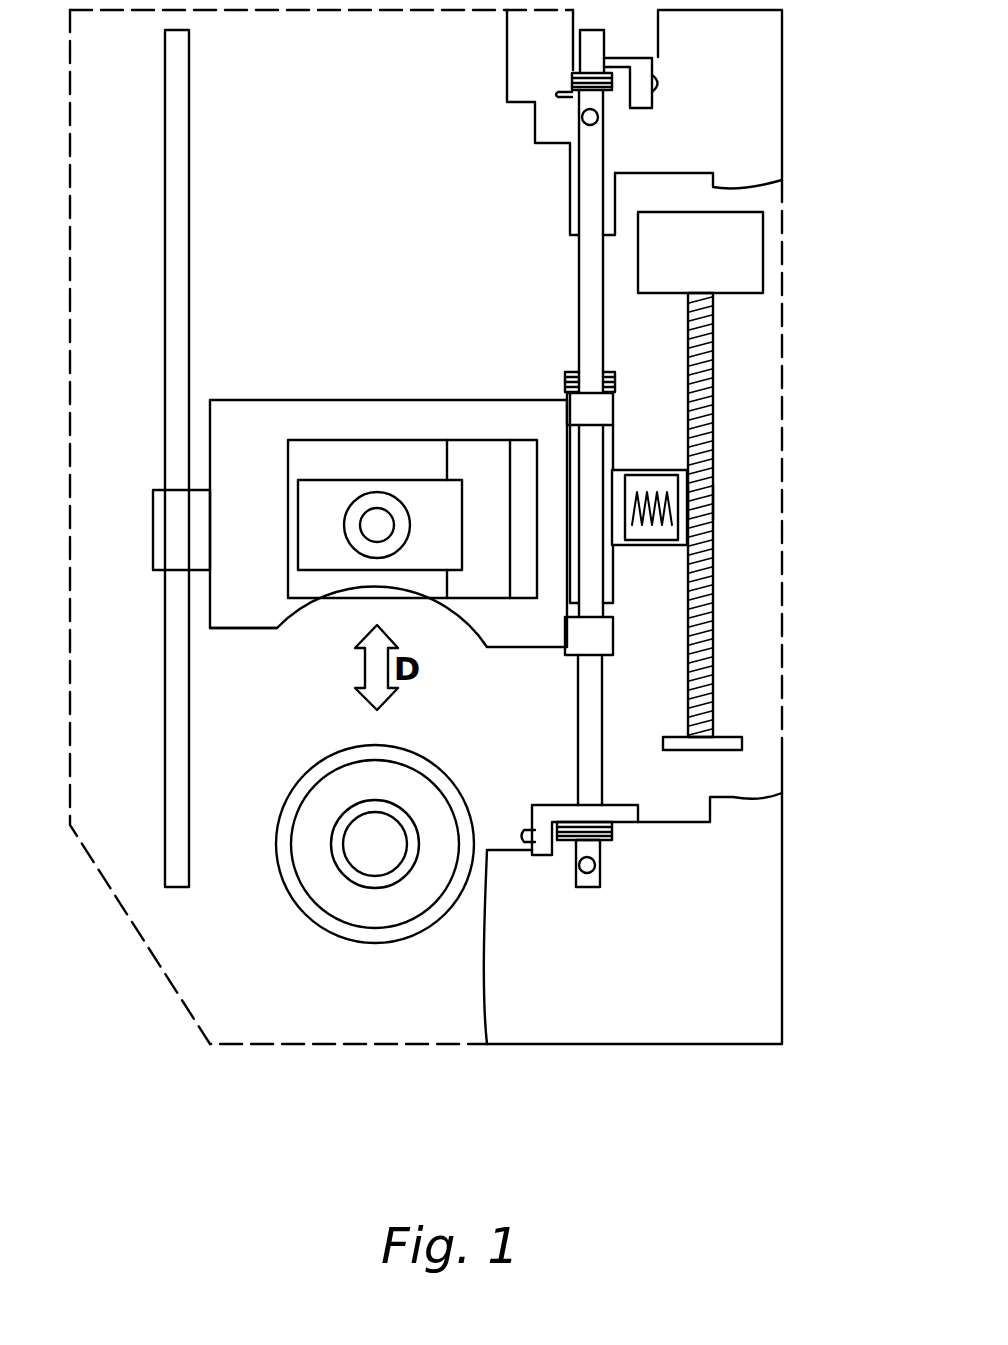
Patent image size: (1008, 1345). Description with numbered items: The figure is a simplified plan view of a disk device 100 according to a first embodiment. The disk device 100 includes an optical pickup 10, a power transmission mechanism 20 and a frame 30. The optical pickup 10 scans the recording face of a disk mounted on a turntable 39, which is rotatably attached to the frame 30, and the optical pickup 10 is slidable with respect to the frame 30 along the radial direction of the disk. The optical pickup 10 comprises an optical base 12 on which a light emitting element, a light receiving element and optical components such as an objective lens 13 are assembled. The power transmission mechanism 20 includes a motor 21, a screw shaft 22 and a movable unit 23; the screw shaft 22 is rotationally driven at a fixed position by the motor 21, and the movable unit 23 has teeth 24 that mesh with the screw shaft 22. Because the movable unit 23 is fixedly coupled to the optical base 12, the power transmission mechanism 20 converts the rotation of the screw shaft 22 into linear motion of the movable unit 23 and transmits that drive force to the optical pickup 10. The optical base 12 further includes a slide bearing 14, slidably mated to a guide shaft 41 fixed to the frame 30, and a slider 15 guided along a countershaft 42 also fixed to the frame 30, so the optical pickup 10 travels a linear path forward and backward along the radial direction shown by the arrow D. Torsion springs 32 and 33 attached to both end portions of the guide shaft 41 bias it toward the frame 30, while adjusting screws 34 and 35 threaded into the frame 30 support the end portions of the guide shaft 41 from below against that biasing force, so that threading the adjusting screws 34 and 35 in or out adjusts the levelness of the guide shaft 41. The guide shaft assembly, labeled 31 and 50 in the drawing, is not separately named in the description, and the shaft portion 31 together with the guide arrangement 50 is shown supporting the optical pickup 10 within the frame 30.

The optical pickup 10 is at (388, 507).
The optical base 12 is at (242, 628).
The objective lens 13 is at (372, 517).
The slide bearing 14 is at (625, 385).
The slider 15 is at (165, 532).
The power transmission mechanism 20 is at (741, 481).
The motor 21 is at (763, 252).
The screw shaft 22 is at (715, 633).
The movable unit 23 is at (613, 452).
The teeth 24 is at (715, 503).
The frame 30 is at (785, 760).
The guide shaft 31 is at (573, 238).
The torsion spring 32 is at (577, 108).
The torsion spring 33 is at (590, 840).
The adjusting screw 34 is at (597, 124).
The adjusting screw 35 is at (587, 884).
The turntable 39 is at (358, 943).
The guide shaft 41 is at (596, 712).
The countershaft 42 is at (165, 762).
The guide mechanism 50 is at (549, 501).
The disk device 100 is at (483, 580).